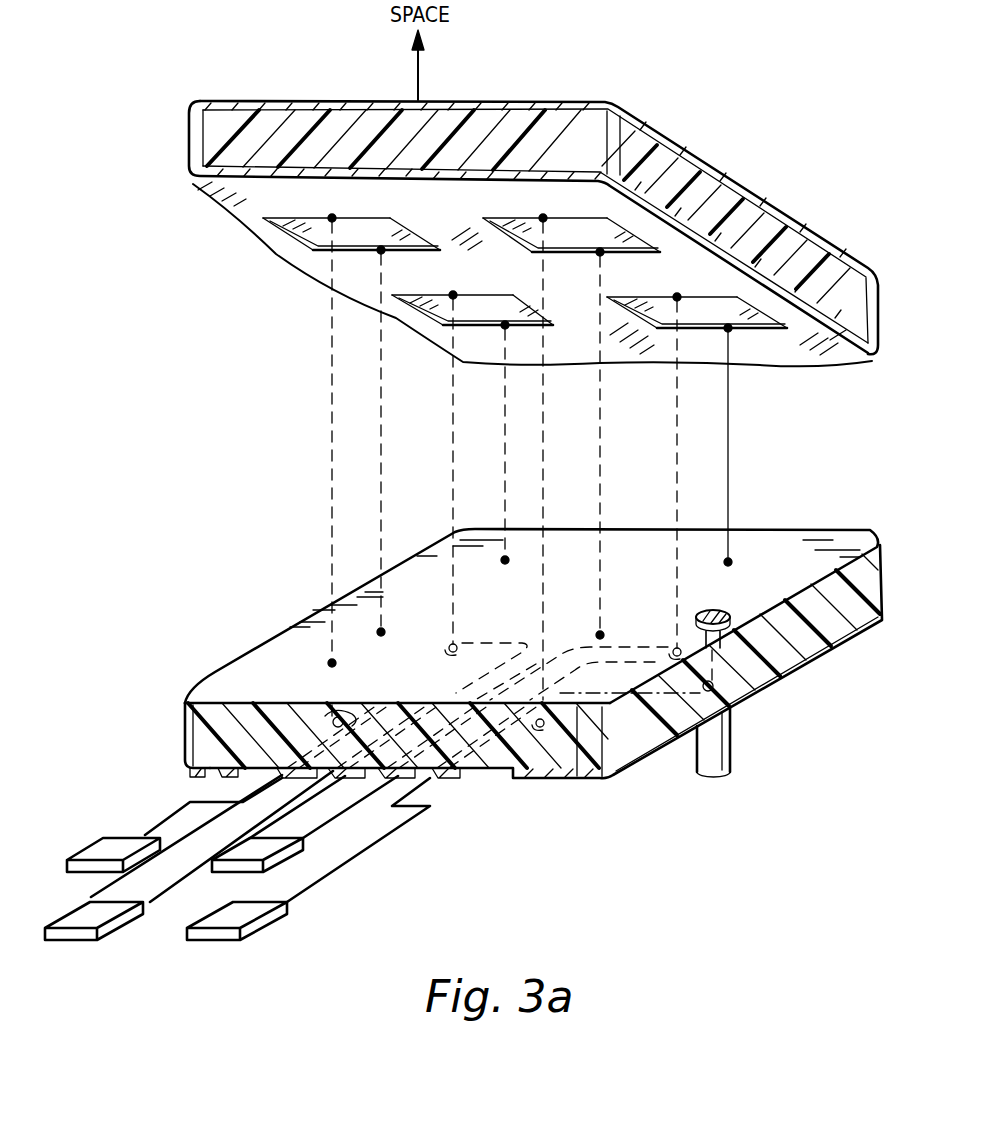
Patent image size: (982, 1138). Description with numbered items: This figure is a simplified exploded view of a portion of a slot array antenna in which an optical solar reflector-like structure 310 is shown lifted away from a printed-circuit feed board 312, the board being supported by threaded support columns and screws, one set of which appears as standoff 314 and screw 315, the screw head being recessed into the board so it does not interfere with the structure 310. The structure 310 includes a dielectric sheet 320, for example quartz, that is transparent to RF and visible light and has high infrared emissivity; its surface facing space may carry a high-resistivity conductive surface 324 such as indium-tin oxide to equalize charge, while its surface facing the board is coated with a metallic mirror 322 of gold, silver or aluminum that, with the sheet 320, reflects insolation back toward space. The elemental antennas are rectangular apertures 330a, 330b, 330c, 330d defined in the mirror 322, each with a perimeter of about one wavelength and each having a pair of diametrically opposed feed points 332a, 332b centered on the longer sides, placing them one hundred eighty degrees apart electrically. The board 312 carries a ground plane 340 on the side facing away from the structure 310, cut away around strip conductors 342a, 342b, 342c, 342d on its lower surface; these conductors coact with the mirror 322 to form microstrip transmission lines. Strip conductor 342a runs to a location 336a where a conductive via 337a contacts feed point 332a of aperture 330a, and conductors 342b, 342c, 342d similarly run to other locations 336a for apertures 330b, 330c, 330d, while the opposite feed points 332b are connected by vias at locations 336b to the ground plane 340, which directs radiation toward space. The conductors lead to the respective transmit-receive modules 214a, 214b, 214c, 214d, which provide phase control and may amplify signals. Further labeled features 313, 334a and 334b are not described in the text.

The OSR-like structure 310 is at (301, 303).
The printed-circuit feed board 312 is at (266, 594).
The top surface of bottom plate 313 is at (185, 712).
The threaded support column 314 is at (732, 745).
The screw 315 is at (722, 610).
The dielectric sheet 320 is at (188, 142).
The metallic mirror 322 is at (235, 218).
The high-resistivity electrically conductive surface 324 is at (390, 102).
The elemental antenna aperture 330a is at (330, 216).
The elemental antenna aperture 330b is at (505, 215).
The elemental antenna aperture 330c is at (432, 318).
The elemental antenna aperture 330d is at (645, 296).
The feed point 332a is at (332, 216).
The feed point 332b is at (381, 252).
The projection line from first edge 334a is at (332, 404).
The projection line from second edge 334b is at (505, 444).
The location 336a is at (330, 663).
The location 336b is at (383, 631).
The conductive via 337a is at (336, 691).
The ground plane 340 is at (185, 748).
The strip conductor 342a is at (240, 790).
The strip conductor 342b is at (460, 780).
The strip conductor 342c is at (275, 808).
The strip conductor 342d is at (372, 790).
The TR module 214a is at (93, 838).
The TR module 214b is at (222, 942).
The TR module 214c is at (77, 942).
The TR module 214d is at (222, 875).